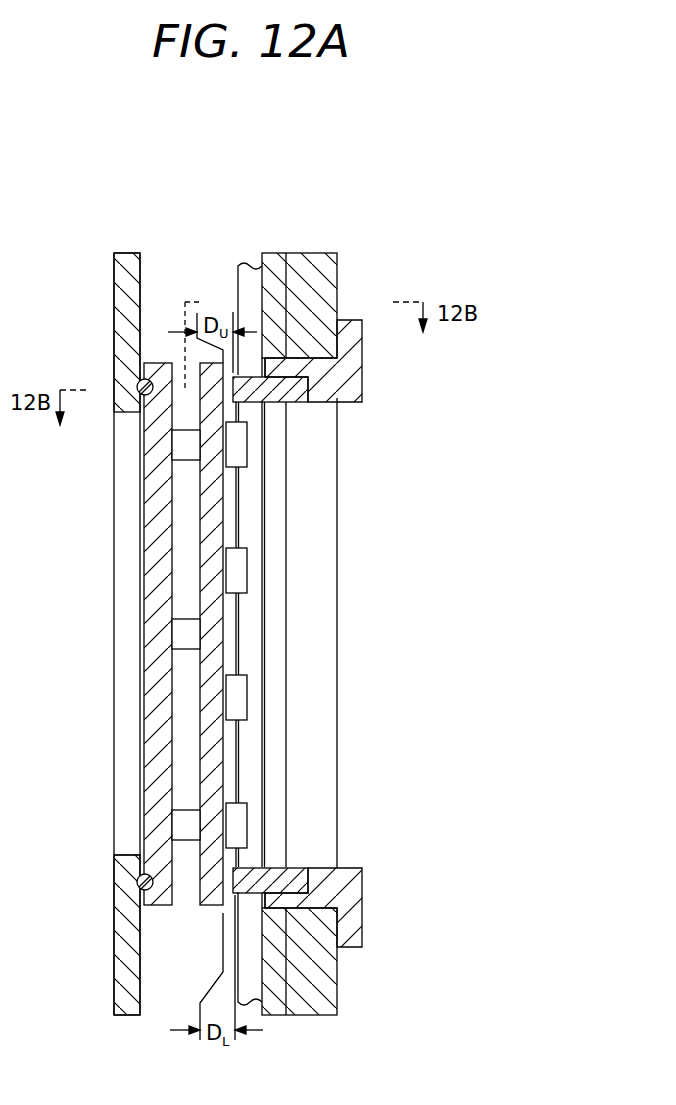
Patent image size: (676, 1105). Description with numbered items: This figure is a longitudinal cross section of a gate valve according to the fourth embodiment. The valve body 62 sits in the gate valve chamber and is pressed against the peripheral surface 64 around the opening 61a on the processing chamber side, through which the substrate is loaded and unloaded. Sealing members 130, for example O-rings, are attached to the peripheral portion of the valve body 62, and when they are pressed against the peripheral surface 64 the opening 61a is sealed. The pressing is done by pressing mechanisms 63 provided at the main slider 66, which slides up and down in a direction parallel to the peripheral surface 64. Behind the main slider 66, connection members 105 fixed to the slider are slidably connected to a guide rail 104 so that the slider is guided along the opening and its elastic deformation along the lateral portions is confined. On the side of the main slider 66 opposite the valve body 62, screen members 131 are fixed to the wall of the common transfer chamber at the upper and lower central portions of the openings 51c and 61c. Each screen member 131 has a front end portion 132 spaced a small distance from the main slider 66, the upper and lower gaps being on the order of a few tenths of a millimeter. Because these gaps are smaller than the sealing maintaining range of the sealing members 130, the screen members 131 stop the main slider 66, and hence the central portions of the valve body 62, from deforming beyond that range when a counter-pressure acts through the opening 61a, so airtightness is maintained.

The peripheral surface 64 is at (149, 305).
The opening 61a is at (130, 853).
The valve body 62 is at (162, 907).
The main slider 66 is at (215, 896).
The pressing mechanism 63 is at (187, 461).
The sealing member 130 is at (139, 381).
The guide rail 104 is at (243, 287).
The opening 61c is at (273, 787).
The opening 51c is at (310, 848).
The screen member 131 is at (324, 405).
The front end portion 132 is at (244, 388).
The connection member 105 is at (240, 447).